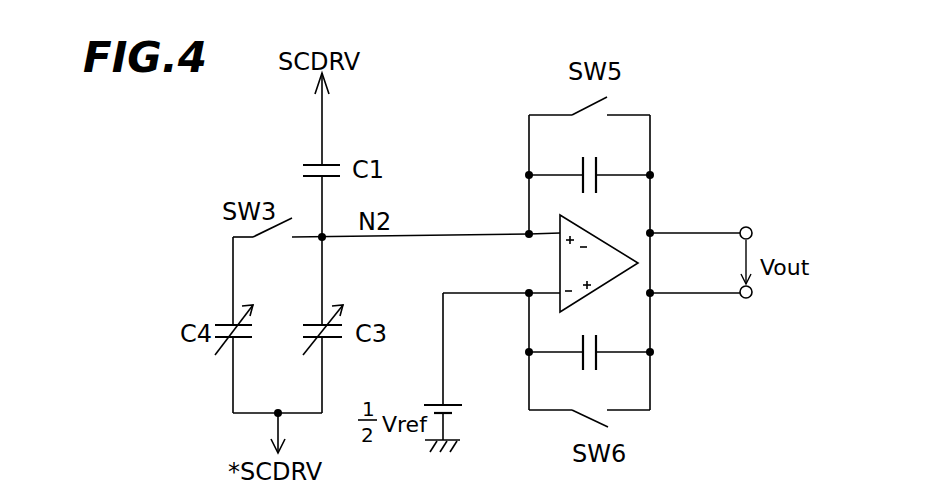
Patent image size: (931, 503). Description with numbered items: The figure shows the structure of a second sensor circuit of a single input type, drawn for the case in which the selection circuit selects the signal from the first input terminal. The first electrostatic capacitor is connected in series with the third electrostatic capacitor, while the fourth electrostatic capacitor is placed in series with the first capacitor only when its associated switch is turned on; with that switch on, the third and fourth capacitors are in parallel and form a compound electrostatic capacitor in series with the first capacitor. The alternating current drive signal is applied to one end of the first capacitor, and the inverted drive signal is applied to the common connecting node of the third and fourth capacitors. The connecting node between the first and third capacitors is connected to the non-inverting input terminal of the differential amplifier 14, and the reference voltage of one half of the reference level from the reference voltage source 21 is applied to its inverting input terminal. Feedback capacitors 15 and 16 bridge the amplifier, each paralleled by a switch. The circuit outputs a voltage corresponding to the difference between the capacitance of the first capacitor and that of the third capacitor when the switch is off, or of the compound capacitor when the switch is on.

The differential amplifier 14 is at (645, 262).
The feedback capacitor Cf 15 is at (633, 157).
The feedback capacitor Cf 16 is at (633, 338).
The reference voltage source 21 is at (460, 414).